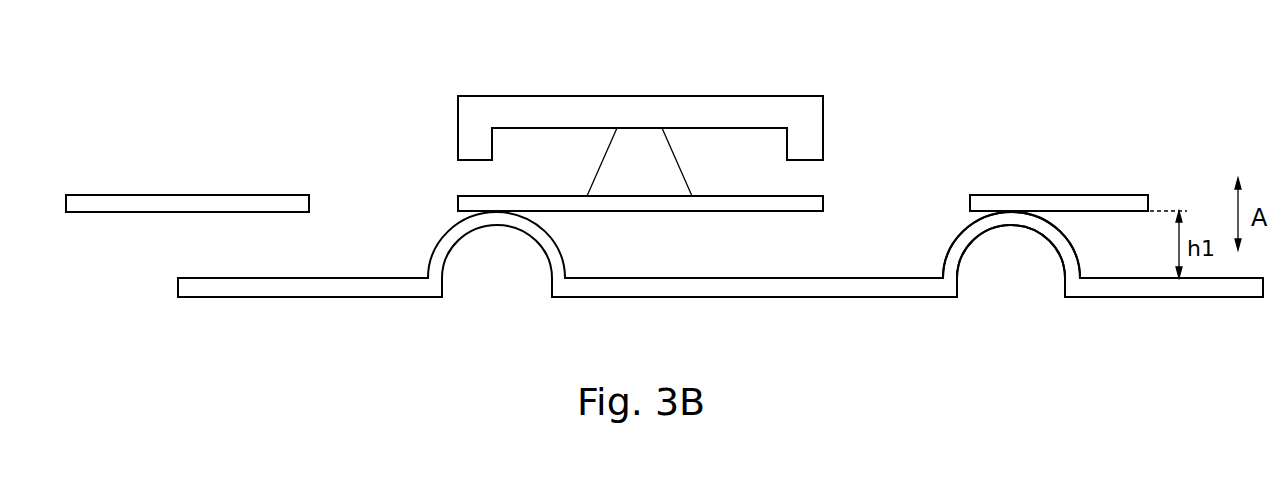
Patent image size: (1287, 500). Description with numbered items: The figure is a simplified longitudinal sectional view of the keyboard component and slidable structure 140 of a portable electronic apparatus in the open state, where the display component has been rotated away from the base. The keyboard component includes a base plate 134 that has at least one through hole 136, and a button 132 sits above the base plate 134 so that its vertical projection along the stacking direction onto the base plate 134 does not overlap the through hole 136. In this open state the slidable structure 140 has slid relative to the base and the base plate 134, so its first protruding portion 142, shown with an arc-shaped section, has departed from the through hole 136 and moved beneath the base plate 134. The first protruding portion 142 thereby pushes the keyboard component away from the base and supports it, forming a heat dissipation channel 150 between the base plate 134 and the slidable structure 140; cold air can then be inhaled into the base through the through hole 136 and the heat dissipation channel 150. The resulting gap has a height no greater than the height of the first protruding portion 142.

The button 132 is at (556, 96).
The base plate 134 is at (1030, 203).
The through hole 136 is at (895, 209).
The slidable structure 140 is at (757, 282).
The first protruding portion 142 is at (955, 261).
The heat dissipation channel 150 is at (589, 258).